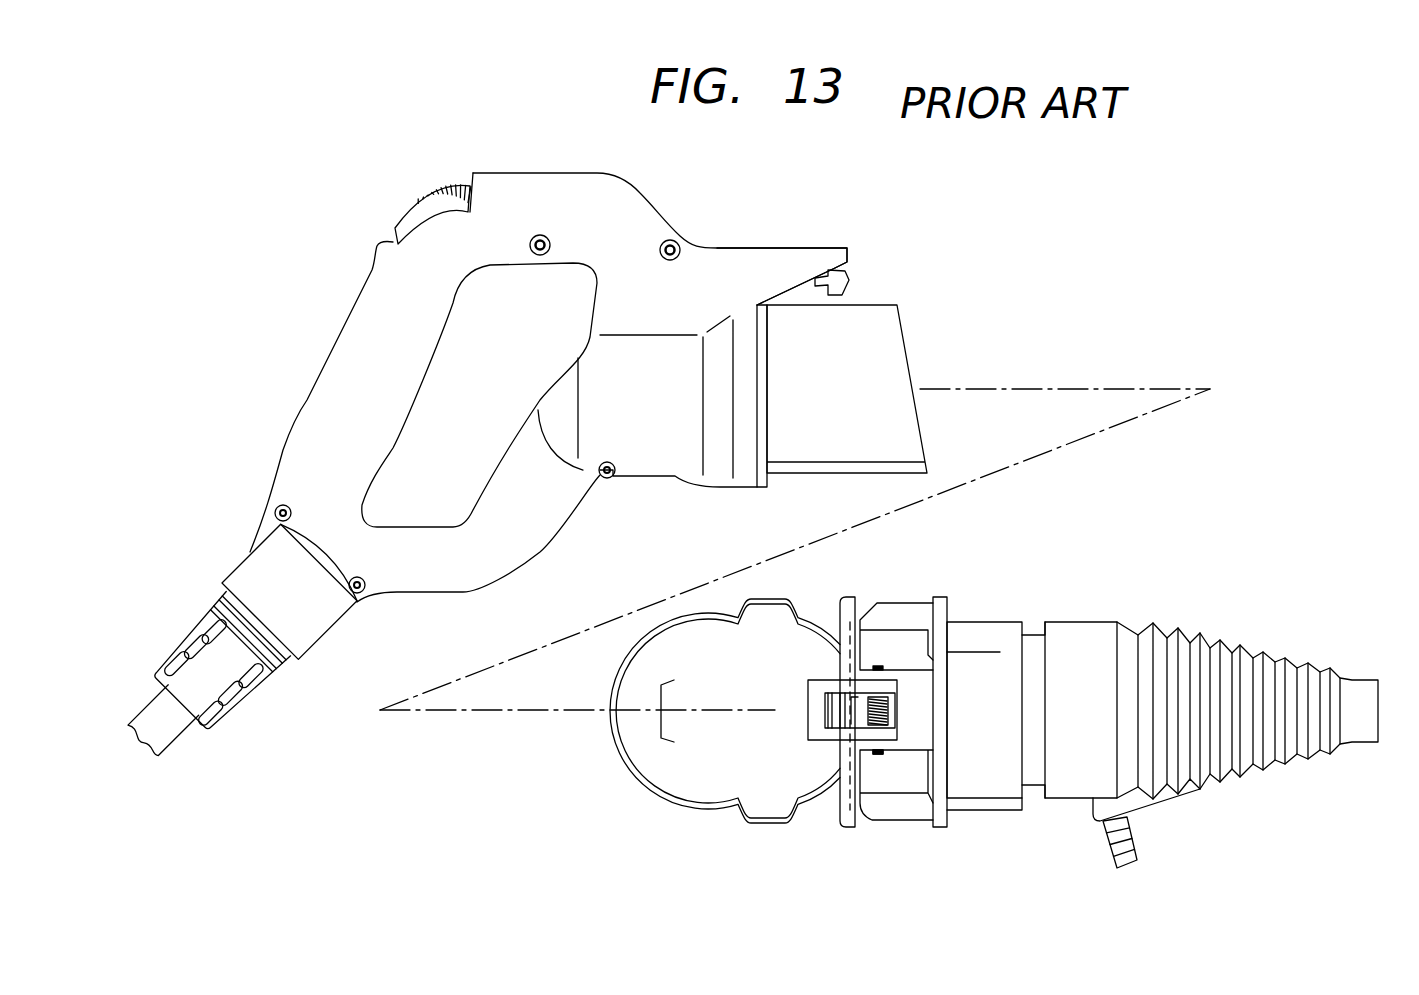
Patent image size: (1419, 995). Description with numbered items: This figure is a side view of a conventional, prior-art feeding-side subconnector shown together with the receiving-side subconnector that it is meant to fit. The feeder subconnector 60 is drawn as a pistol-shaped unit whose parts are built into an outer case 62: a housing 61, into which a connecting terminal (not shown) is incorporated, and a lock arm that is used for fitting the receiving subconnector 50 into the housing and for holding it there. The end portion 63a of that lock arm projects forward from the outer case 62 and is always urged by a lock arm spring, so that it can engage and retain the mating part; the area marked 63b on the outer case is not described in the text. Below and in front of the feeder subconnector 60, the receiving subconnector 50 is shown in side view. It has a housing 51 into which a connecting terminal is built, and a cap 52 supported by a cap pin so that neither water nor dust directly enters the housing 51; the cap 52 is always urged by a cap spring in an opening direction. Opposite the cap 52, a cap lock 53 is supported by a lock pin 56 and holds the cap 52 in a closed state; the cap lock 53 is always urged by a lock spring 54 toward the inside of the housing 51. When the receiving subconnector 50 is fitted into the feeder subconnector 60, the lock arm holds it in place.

The receiving subconnector 50 is at (1068, 565).
The housing 51 is at (1000, 634).
The cap 52 is at (695, 667).
The cap lock 53 is at (818, 733).
The lock spring 54 is at (880, 722).
The lock pin 56 is at (878, 753).
The feeder subconnector 60 is at (892, 203).
The housing 61 is at (888, 337).
The outer case 62 is at (748, 257).
The end portion of the lock arm 63a is at (838, 270).
The thumb pad 63b is at (420, 208).